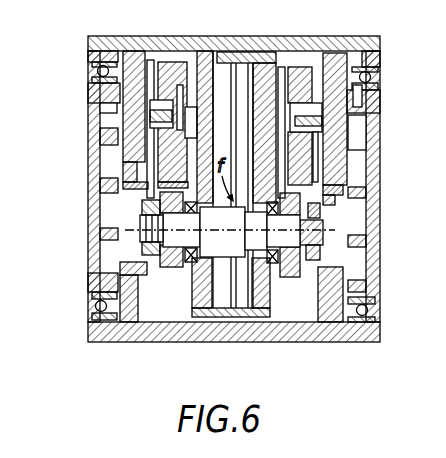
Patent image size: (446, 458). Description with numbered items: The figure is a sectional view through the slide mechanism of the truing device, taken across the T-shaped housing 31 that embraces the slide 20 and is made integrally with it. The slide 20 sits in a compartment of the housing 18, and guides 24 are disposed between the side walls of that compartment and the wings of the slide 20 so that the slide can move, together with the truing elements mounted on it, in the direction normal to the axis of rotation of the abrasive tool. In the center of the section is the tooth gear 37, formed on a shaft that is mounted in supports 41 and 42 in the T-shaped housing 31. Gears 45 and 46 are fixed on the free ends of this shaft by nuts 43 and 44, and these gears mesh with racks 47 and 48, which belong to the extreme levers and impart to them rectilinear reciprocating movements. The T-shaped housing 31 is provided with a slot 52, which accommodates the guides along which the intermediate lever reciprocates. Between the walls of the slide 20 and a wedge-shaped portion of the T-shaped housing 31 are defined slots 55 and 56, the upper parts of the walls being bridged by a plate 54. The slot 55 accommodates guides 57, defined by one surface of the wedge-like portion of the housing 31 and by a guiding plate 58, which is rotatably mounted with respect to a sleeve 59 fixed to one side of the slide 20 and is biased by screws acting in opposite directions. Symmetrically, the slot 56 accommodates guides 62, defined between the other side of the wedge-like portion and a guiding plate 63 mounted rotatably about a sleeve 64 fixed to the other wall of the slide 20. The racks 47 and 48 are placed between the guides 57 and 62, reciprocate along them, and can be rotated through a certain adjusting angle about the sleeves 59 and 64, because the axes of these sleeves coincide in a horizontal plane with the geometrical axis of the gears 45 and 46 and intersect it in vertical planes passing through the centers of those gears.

The plate 54 is at (106, 36).
The slot 55 is at (151, 60).
The rack 47 is at (174, 62).
The T-shaped housing 31 is at (215, 51).
The slot 52 is at (245, 70).
The slot 56 is at (290, 60).
The rack 48 is at (303, 70).
The guides 24 is at (95, 71).
The guides 57 is at (185, 117).
The sleeve 59 is at (99, 108).
The guiding plate 58 is at (130, 173).
The housing 18 is at (100, 235).
The nut 43 is at (100, 286).
The guides 62 is at (333, 118).
The guiding plate 63 is at (345, 185).
The sleeve 64 is at (349, 204).
The nut 44 is at (320, 254).
The slide 20 is at (243, 341).
The gear 45 is at (166, 268).
The support 41 is at (185, 268).
The support 42 is at (278, 270).
The gear 46 is at (303, 275).
The tooth gear 37 is at (233, 247).